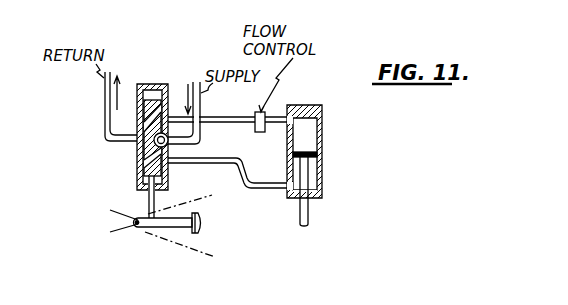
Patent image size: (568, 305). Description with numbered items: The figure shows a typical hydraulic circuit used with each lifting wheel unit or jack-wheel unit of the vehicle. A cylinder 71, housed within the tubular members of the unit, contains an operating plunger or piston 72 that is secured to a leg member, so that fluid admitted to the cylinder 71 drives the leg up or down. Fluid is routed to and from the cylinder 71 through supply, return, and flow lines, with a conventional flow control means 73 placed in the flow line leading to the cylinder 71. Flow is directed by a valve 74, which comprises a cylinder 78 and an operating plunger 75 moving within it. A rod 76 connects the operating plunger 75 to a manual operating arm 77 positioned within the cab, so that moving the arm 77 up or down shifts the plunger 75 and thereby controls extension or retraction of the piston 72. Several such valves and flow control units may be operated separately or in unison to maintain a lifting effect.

The cylinder 71 is at (323, 128).
The operating plunger 72 is at (309, 204).
The flow control means 73 is at (268, 120).
The valve 74 is at (137, 172).
The operating plunger 75 is at (143, 160).
The rod 76 is at (156, 197).
The manual operating arm 77 is at (170, 228).
The cylinder 78 is at (169, 92).